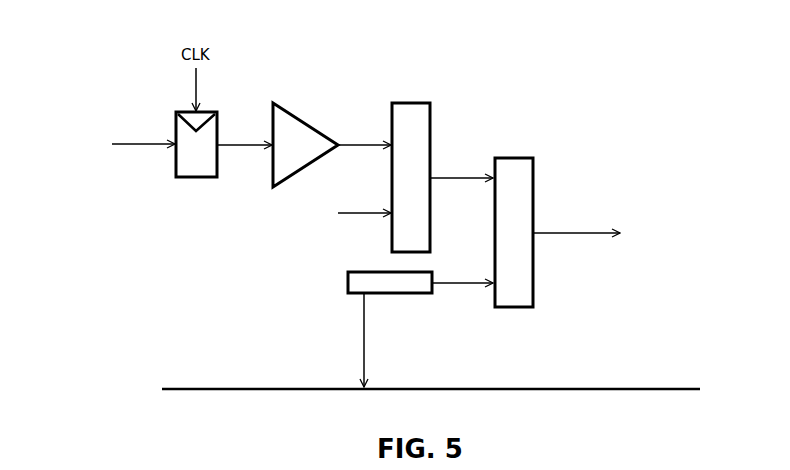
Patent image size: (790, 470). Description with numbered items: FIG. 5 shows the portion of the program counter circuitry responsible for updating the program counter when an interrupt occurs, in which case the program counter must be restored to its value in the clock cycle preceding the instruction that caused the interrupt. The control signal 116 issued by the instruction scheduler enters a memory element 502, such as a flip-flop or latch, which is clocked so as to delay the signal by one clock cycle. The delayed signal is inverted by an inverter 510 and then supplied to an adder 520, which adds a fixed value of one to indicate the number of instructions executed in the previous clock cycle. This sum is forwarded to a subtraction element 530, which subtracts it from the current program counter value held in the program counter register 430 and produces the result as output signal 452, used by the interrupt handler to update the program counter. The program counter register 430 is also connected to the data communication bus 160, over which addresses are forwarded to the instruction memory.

The control signal 116 is at (127, 143).
The memory element 502 is at (184, 178).
The inverter 510 is at (294, 128).
The adder 520 is at (410, 125).
The subtraction element 530 is at (512, 170).
The output signal 452 is at (581, 232).
The program counter register 430 is at (347, 279).
The data communication bus 160 is at (194, 388).